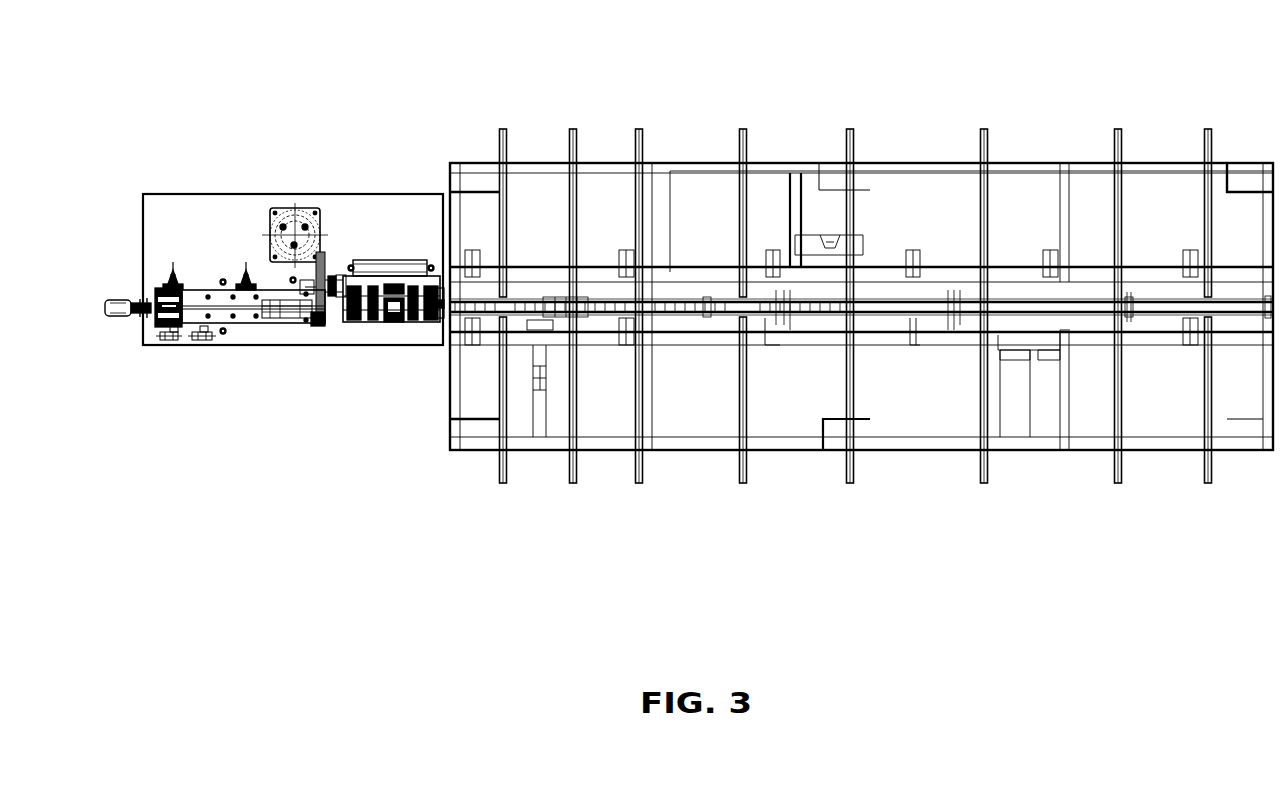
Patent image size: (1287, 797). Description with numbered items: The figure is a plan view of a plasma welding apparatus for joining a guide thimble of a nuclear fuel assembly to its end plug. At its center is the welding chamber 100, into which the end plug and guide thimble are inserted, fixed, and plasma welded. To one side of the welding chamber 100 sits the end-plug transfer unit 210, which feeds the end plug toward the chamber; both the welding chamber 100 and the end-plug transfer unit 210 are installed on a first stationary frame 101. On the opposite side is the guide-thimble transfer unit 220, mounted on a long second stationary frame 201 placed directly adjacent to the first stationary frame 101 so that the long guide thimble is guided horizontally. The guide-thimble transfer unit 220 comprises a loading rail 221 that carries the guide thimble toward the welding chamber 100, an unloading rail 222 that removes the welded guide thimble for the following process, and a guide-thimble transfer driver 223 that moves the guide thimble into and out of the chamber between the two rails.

The welding chamber 100 is at (387, 242).
The first stationary frame 101 is at (245, 346).
The second stationary frame 201 is at (782, 443).
The end-plug transfer unit 210 is at (274, 246).
The guide-thimble transfer unit 220 is at (861, 309).
The loading rail 221 is at (958, 300).
The unloading rail 222 is at (503, 129).
The guide-thimble transfer driver 223 is at (553, 300).